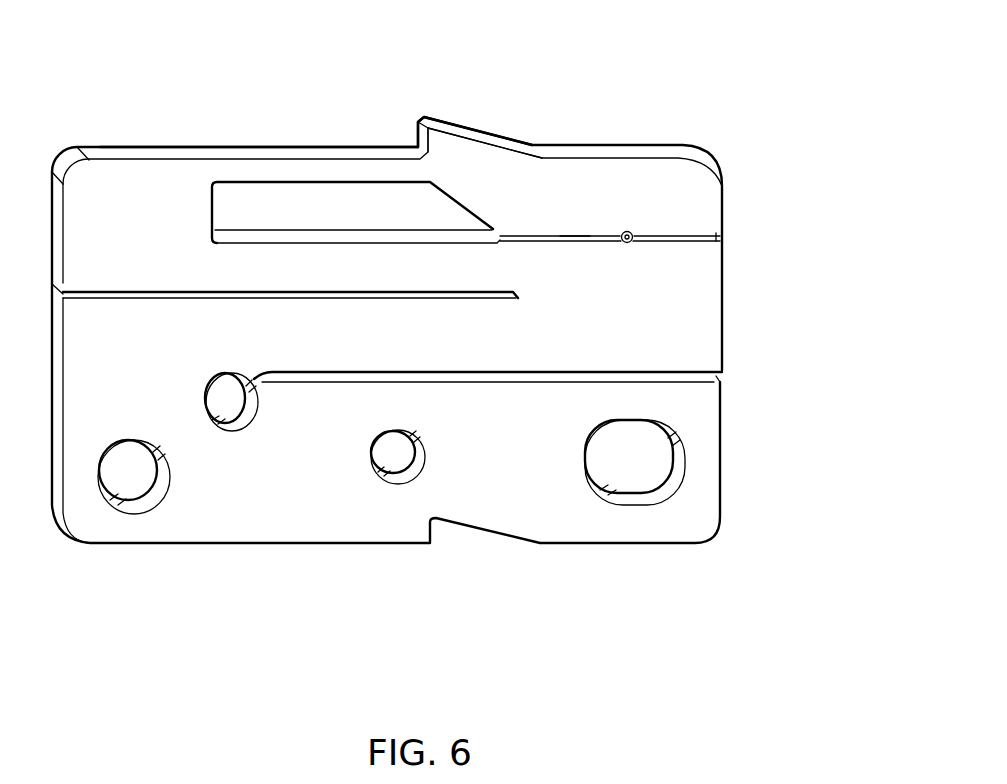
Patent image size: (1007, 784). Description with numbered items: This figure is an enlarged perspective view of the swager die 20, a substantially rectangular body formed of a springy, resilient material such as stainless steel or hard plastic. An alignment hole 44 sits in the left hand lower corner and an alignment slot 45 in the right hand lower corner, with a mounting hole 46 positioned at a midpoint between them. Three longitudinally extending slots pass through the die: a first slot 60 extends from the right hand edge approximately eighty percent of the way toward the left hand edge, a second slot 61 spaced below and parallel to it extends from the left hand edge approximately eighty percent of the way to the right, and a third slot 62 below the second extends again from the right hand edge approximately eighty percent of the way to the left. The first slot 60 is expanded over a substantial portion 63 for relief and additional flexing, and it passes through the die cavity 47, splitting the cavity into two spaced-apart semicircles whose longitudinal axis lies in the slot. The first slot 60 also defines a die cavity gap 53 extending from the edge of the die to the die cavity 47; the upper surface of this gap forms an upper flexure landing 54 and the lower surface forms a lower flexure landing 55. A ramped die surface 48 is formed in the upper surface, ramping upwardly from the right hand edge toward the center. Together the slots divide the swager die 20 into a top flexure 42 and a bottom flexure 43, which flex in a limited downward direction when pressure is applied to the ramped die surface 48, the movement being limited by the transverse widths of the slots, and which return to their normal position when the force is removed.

The swager die 20 is at (458, 47).
The top flexure 42 is at (310, 148).
The bottom flexure 43 is at (312, 343).
The alignment hole 44 is at (130, 500).
The alignment slot 45 is at (628, 503).
The mounting hole 46 is at (425, 470).
The die cavity 47 is at (628, 231).
The ramped die surface 48 is at (444, 152).
The die cavity gap 53 is at (720, 237).
The upper flexure landing 54 is at (670, 234).
The lower flexure landing 55 is at (675, 250).
The first longitudinally extending slot 60 is at (588, 242).
The second longitudinally extending slot 61 is at (120, 300).
The third longitudinally extending slot 62 is at (577, 375).
The expanded portion of first slot 63 is at (367, 192).